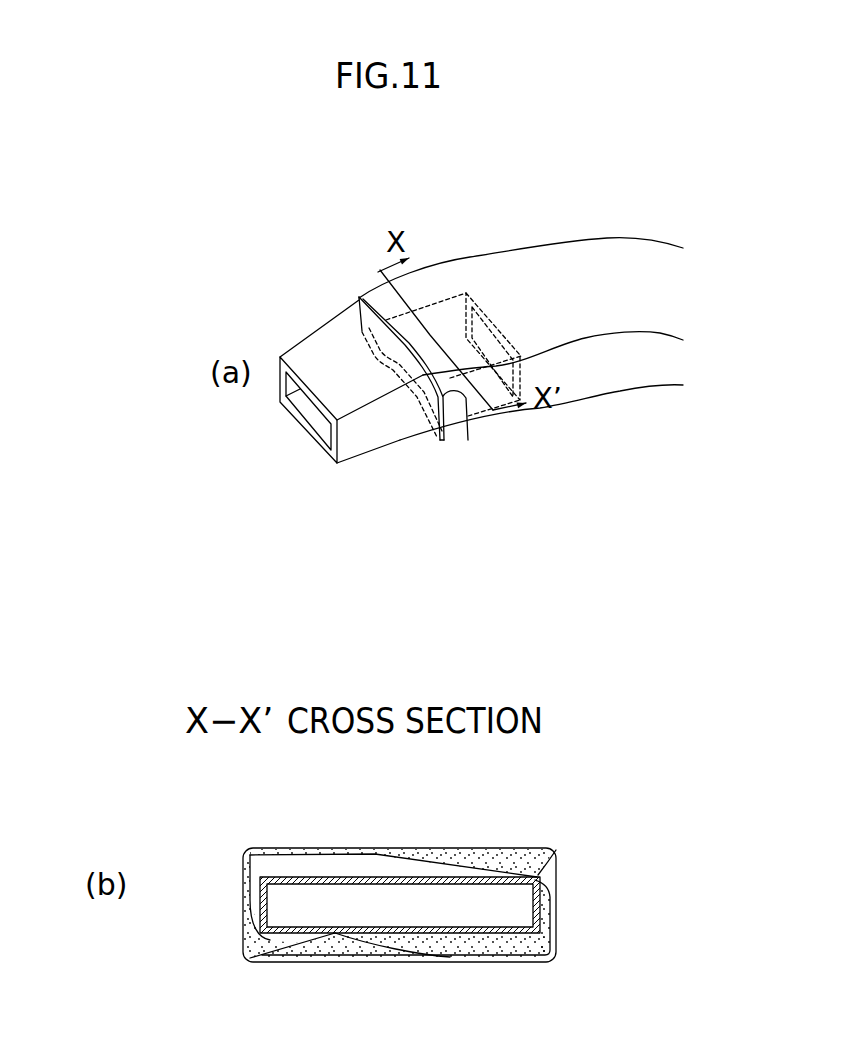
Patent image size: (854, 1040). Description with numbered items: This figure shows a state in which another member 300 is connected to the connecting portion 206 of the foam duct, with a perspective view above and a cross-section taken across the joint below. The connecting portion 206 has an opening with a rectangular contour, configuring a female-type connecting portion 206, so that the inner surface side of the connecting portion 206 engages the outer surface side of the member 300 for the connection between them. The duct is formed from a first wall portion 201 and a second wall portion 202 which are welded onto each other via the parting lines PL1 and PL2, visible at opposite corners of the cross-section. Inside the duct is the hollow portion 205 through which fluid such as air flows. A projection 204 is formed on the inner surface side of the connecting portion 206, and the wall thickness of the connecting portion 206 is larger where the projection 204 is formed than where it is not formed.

The first wall portion 201 is at (506, 283).
The second wall portion 202 is at (430, 432).
The projection 204 is at (424, 374).
The hollow portion 205 is at (360, 307).
The connecting portion 206 is at (592, 212).
The member 300 is at (303, 350).
The parting line PL1 is at (247, 960).
The parting line PL2 is at (468, 440).